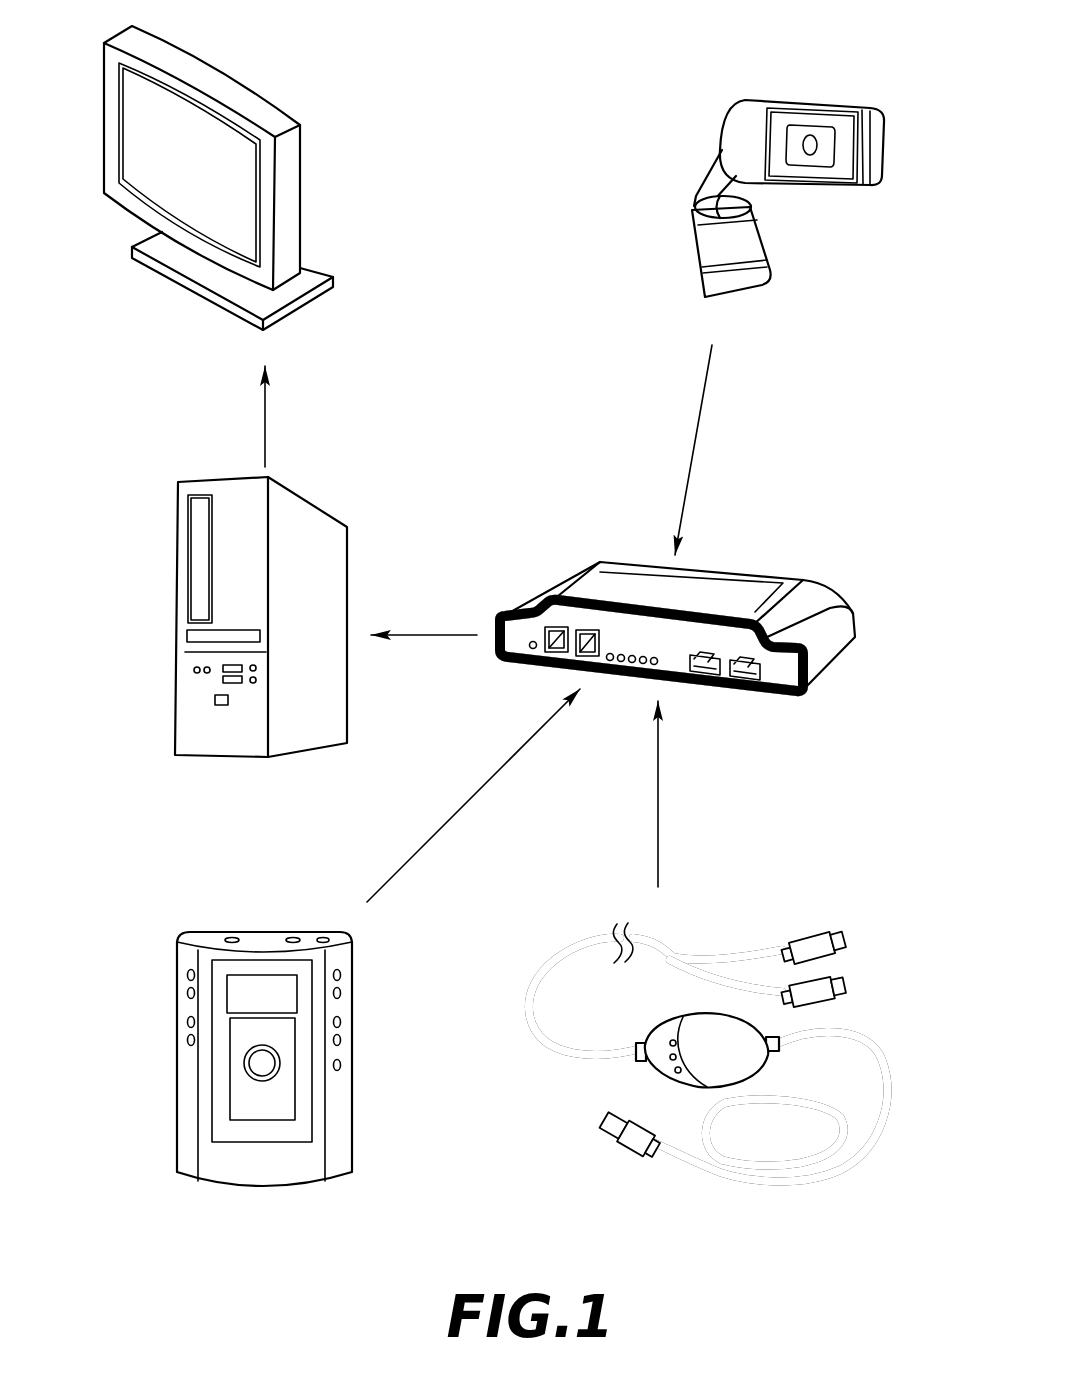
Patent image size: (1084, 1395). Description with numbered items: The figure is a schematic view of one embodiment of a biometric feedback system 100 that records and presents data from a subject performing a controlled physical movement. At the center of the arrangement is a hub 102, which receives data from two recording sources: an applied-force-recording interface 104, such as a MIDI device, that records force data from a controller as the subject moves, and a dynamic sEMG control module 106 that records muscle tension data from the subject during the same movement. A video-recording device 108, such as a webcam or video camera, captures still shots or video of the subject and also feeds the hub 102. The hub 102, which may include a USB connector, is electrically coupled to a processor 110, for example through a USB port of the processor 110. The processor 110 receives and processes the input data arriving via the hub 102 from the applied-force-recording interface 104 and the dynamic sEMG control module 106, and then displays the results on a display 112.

The biometric feedback system 100 is at (517, 117).
The hub 102 is at (777, 557).
The applied-force-recording interface 104 is at (767, 892).
The dynamic sEMG control module 106 is at (210, 902).
The video-recording device 108 is at (813, 88).
The processor 110 is at (320, 497).
The display 112 is at (285, 89).